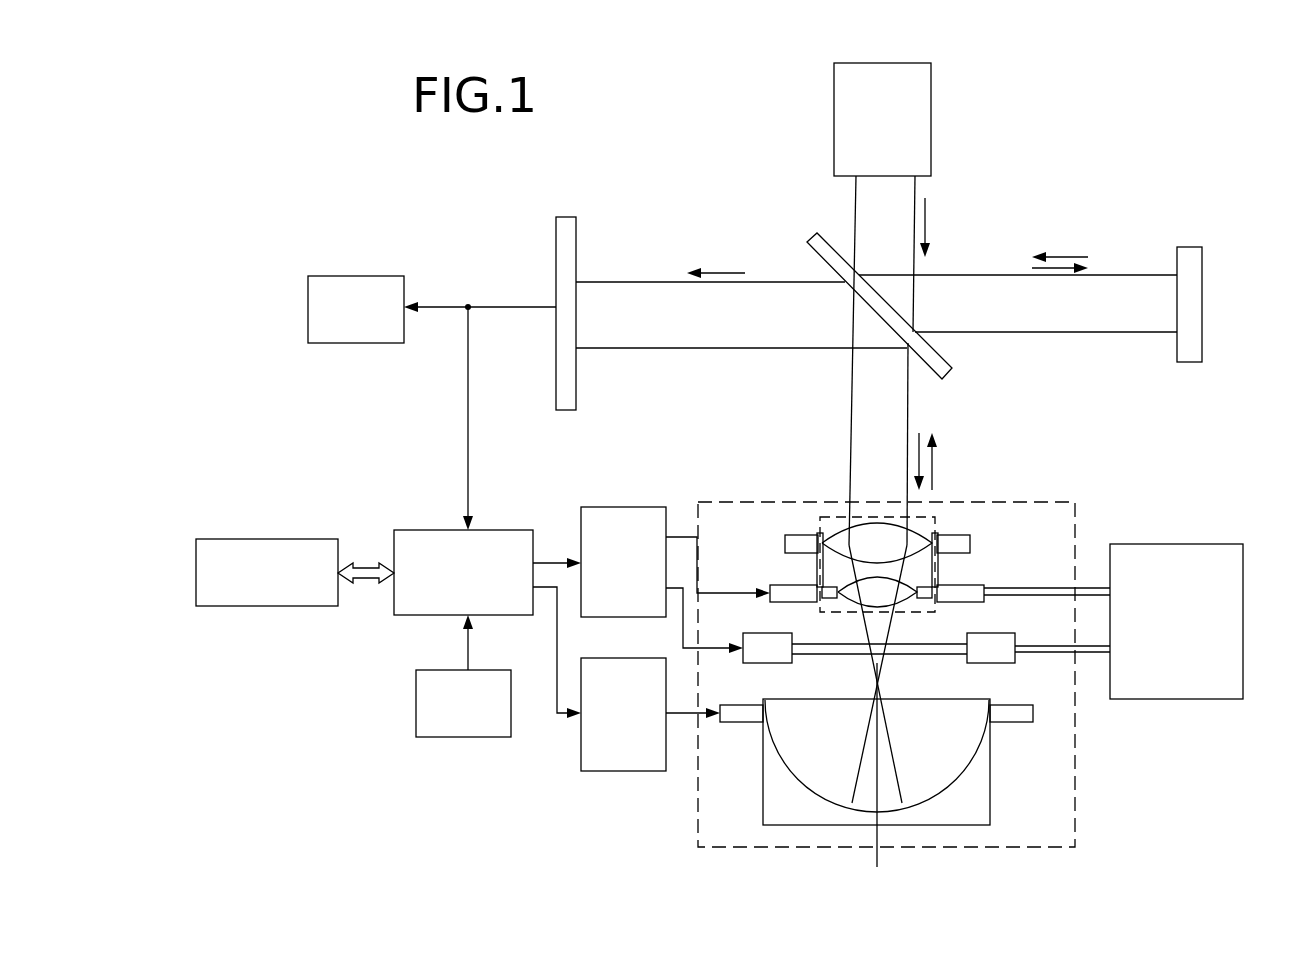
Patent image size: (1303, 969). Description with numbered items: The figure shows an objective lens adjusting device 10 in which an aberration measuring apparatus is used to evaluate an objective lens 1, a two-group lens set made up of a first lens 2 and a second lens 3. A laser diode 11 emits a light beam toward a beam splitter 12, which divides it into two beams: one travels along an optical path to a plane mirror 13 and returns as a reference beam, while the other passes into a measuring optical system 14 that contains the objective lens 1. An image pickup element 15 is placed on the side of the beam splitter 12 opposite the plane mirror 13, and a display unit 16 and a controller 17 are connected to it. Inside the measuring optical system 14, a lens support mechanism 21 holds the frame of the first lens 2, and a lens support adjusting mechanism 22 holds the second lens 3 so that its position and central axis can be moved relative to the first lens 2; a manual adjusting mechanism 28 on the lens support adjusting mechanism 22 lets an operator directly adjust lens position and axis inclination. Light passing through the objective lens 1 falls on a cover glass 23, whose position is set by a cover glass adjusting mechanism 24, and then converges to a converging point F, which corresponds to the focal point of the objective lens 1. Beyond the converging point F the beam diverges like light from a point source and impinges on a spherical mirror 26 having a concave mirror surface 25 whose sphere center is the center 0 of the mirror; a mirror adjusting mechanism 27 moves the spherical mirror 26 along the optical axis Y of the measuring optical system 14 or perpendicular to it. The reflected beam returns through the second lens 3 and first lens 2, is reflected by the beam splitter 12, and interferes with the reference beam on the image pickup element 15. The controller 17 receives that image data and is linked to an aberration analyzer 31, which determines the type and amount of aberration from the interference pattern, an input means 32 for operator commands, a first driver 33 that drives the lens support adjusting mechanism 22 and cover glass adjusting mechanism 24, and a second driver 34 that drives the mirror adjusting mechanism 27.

The lens adjusting device 10 is at (1154, 115).
The laser diode 11 is at (931, 77).
The beam splitter 12 is at (947, 361).
The plane mirror 13 is at (1195, 247).
The measuring optical system 14 is at (1030, 502).
The image pickup element 15 is at (578, 232).
The display unit 16 is at (385, 276).
The controller 17 is at (510, 530).
The objective lens 1 is at (837, 516).
The first lens 2 is at (912, 527).
The second lens 3 is at (917, 600).
The lens support mechanism 21 is at (963, 533).
The lens support adjusting mechanism 22 is at (973, 585).
The cover glass 23 is at (909, 655).
The cover glass adjusting mechanism 24 is at (1000, 663).
The concave mirror surface 25 is at (790, 760).
The spherical mirror 26 is at (990, 795).
The mirror adjusting mechanism 27 is at (740, 722).
The manual adjusting mechanism 28 is at (1205, 544).
The aberration analyzer 31 is at (315, 539).
The input means 32 is at (445, 737).
The first driver 33 is at (640, 507).
The second driver 34 is at (595, 771).
The center of spherical mirror 0 is at (880, 700).
The converging point F is at (875, 697).
The optical axis Y is at (877, 779).